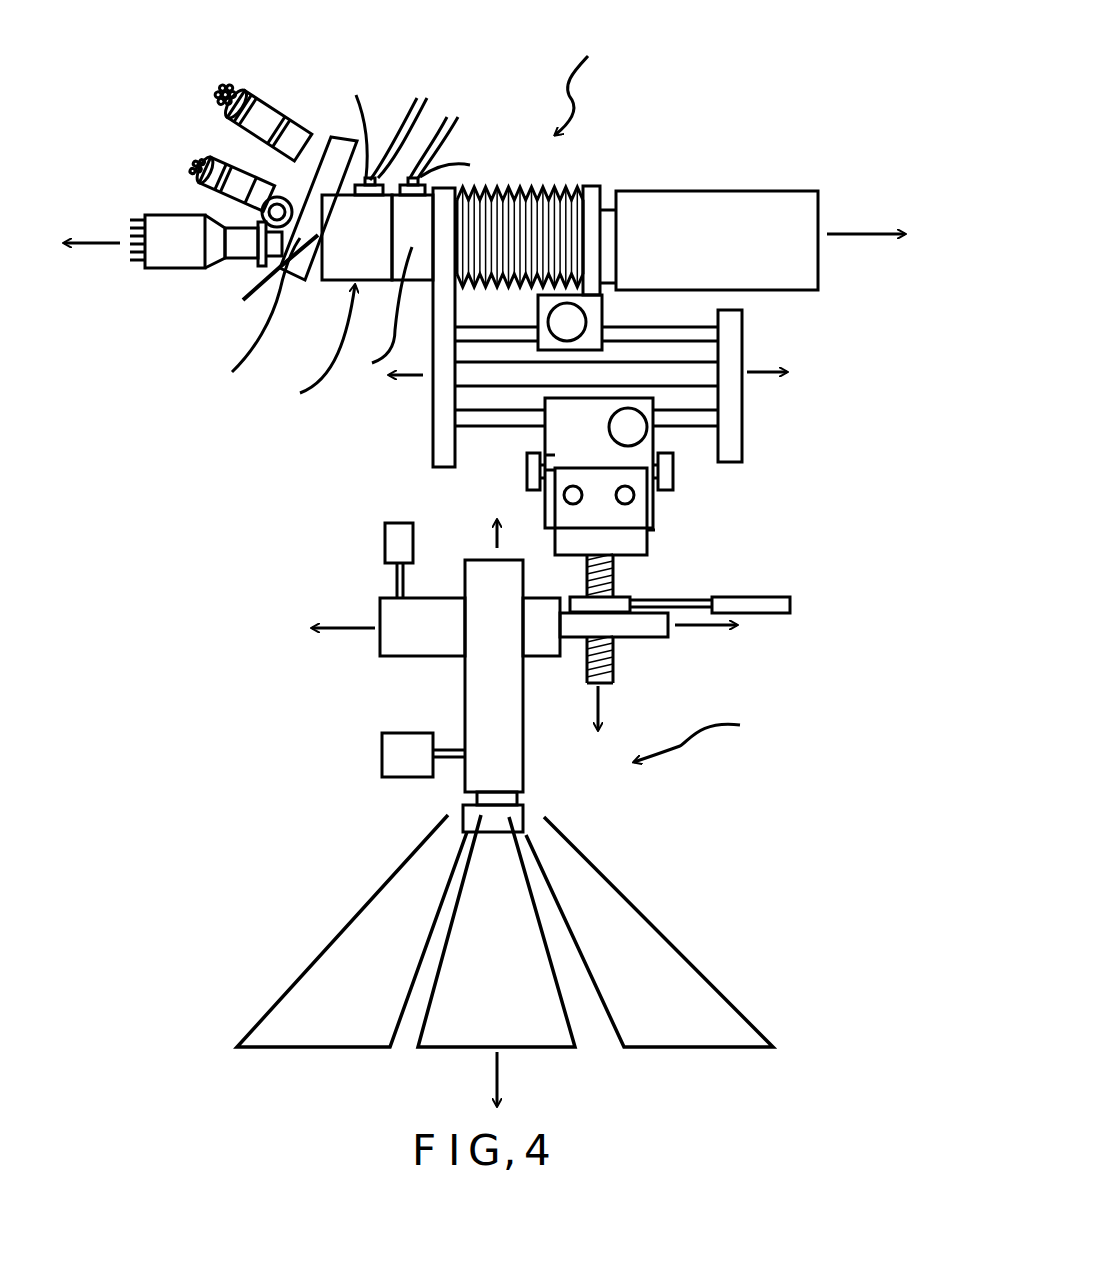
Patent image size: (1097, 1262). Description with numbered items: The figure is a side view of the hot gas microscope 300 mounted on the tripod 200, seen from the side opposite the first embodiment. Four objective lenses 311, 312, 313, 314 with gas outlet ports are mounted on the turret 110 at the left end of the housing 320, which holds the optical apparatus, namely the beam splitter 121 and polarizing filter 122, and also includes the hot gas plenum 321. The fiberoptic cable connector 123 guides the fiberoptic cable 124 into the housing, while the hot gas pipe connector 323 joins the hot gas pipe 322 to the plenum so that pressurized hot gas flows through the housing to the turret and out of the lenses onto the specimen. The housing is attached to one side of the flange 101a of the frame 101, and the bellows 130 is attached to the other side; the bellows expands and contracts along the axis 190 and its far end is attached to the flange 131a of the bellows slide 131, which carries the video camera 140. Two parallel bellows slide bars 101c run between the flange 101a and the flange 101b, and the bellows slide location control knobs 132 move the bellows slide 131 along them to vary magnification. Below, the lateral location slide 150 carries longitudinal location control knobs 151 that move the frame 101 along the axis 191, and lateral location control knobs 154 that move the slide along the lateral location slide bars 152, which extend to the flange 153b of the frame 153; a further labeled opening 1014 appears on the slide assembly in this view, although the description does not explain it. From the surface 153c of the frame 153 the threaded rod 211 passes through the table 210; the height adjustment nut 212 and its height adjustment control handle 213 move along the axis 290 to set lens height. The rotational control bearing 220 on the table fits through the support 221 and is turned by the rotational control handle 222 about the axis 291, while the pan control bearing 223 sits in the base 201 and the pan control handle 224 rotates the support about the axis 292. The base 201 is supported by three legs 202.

The turret 110 is at (240, 307).
The beam splitter 121 is at (378, 272).
The polarizing filter 122 is at (337, 270).
The fiberoptic cable connector 123 is at (354, 137).
The fiberoptic cable 124 is at (400, 110).
The bellows 130 is at (542, 186).
The bellows slide 131 is at (590, 305).
The flange of bellows slide 131a is at (588, 192).
The bellows slide location control knob 132 is at (572, 328).
The video camera 140 is at (748, 212).
The lateral location slide 150 is at (572, 426).
The longitudinal location control knob 151 is at (655, 462).
The lateral location slide bar 152 is at (572, 500).
The frame 153 is at (606, 528).
The flange of frame 153b is at (625, 500).
The surface of frame 153c is at (656, 540).
The lateral location control knob 154 is at (527, 473).
The axis 190 is at (100, 242).
The axis 191 is at (405, 380).
The frame 101 is at (698, 418).
The flange of frame 101a is at (433, 412).
The flange of frame 101b is at (742, 320).
The bellows slide bar 101c is at (690, 333).
The bearing opening 1014 is at (643, 434).
The tripod 200 is at (712, 743).
The base 201 is at (530, 817).
The legs 202 is at (398, 924).
The table 210 is at (648, 637).
The threaded rod 211 is at (620, 660).
The height adjustment nut 212 is at (632, 600).
The height adjustment control handle 213 is at (790, 606).
The rotational control bearing 220 is at (392, 633).
The support 221 is at (477, 673).
The rotational control handle 222 is at (393, 552).
The pan control bearing 223 is at (520, 802).
The pan control handle 224 is at (402, 758).
The axis 290 is at (598, 700).
The axis 291 is at (712, 628).
The axis 292 is at (492, 546).
The microscope 300 is at (585, 85).
The objective lens 311 is at (177, 250).
The objective lens 312 is at (267, 145).
The objective lens 313 is at (250, 180).
The objective lens 314 is at (243, 300).
The housing 320 is at (294, 348).
The hot gas plenum 321 is at (370, 316).
The hot gas pipe 322 is at (448, 125).
The hot gas pipe connector 323 is at (466, 163).